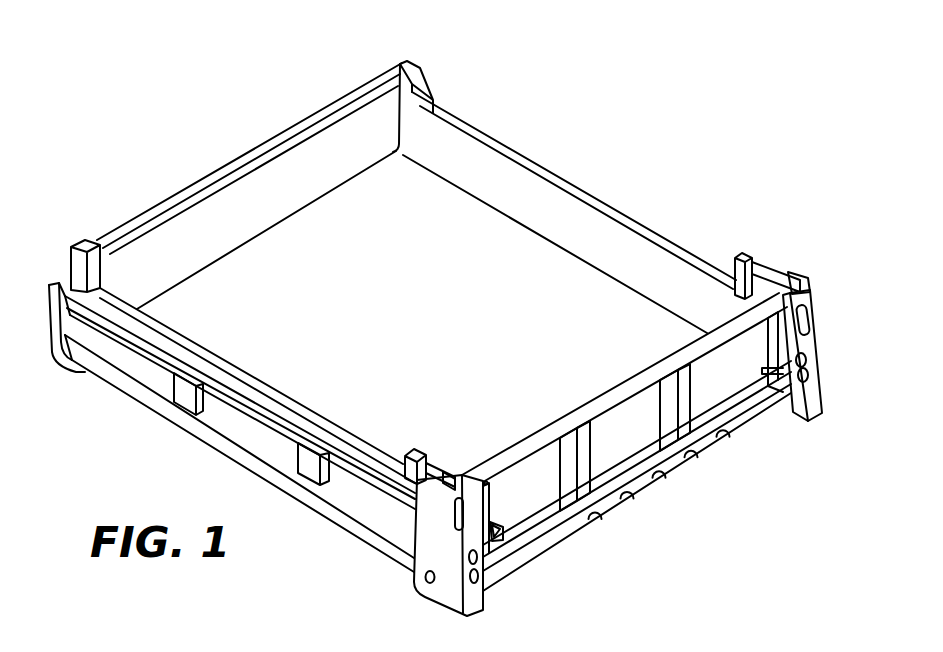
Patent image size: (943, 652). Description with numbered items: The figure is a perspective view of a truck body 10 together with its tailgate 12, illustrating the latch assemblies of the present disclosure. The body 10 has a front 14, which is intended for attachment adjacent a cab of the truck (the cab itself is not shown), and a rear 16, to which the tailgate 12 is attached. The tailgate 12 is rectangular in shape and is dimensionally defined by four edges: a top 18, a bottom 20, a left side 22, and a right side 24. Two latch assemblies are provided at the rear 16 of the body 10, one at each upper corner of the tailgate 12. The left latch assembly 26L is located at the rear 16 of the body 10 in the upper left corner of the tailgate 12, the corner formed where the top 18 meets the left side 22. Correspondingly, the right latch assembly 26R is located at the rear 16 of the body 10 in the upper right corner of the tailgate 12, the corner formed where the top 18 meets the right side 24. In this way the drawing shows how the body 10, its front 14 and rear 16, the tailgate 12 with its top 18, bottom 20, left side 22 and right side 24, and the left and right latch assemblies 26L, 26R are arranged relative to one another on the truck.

The body 10 is at (593, 200).
The tailgate 12 is at (640, 440).
The front 14 is at (447, 72).
The rear 16 is at (354, 561).
The top 18 is at (617, 390).
The bottom 20 is at (645, 490).
The left side 22 is at (487, 522).
The right side 24 is at (781, 340).
The left latch assembly 26L is at (440, 468).
The right latch assembly 26R is at (782, 272).